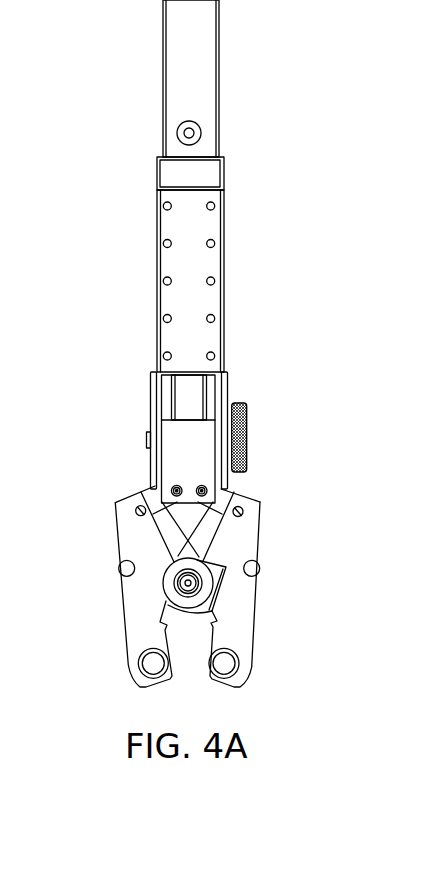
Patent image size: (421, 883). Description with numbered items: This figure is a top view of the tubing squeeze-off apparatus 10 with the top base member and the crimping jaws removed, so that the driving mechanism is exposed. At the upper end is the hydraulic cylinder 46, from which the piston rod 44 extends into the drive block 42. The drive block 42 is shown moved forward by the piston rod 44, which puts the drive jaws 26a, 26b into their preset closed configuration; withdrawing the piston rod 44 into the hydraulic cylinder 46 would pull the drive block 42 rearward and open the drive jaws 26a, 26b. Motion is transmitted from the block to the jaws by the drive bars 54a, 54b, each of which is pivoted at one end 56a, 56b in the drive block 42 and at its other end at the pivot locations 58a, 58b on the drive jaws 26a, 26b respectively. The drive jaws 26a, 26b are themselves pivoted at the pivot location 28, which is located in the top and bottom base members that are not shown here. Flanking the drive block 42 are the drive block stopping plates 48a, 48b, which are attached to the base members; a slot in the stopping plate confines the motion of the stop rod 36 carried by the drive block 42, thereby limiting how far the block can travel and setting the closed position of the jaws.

The tubing squeeze-off apparatus 10 is at (256, 291).
The hydraulic cylinder 46 is at (204, 274).
The drive block stopping plate 48a is at (148, 382).
The drive block stopping plate 48b is at (232, 383).
The stop rod 36 is at (146, 427).
The drive block 42 is at (204, 459).
The piston rod 44 is at (203, 410).
The pivot end of drive bar 56a is at (171, 487).
The pivot end of drive bar 56b is at (207, 487).
The drive bar 54a is at (147, 492).
The drive bar 54b is at (228, 493).
The pivot location 58a is at (137, 508).
The pivot location 58b is at (242, 508).
The drive jaw 26a is at (143, 585).
The drive jaw 26b is at (233, 605).
The pivot location 28 is at (182, 588).